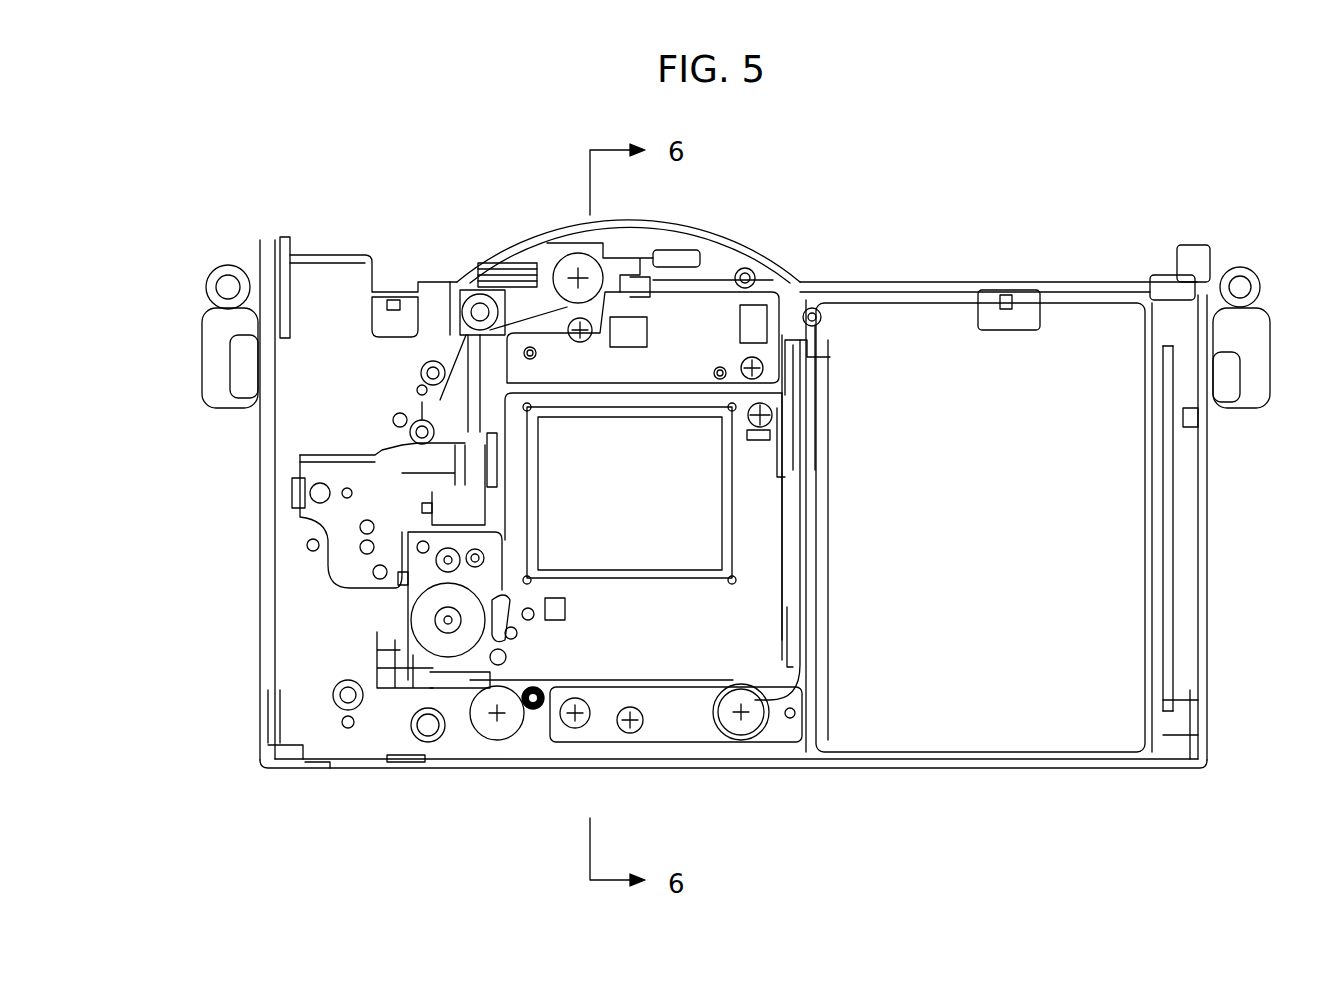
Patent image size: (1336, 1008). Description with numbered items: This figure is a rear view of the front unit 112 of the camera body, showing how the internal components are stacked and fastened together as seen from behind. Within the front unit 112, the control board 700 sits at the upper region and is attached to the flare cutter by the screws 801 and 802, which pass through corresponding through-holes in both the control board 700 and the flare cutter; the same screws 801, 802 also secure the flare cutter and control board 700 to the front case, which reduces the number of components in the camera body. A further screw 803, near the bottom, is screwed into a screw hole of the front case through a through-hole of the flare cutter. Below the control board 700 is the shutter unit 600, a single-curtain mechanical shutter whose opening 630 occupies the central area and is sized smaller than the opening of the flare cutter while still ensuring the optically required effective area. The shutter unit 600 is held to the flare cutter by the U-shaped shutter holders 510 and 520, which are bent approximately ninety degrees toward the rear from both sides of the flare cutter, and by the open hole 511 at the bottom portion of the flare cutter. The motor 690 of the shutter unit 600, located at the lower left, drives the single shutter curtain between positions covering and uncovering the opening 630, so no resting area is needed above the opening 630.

The front unit 112 is at (985, 187).
The control board 700 is at (680, 327).
The screw 802 is at (582, 328).
The screw 801 is at (754, 366).
The shutter holder 520 is at (785, 440).
The shutter holder 510 is at (485, 458).
The motor 690 is at (425, 632).
The opening 630 is at (735, 580).
The shutter unit 600 is at (707, 633).
The screw 803 is at (560, 718).
The open hole 511 is at (530, 700).